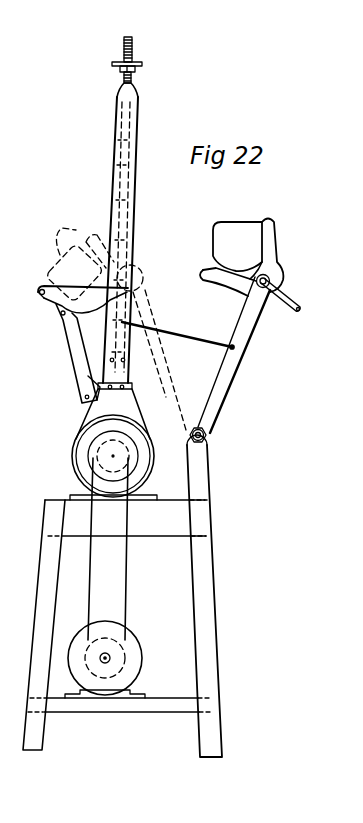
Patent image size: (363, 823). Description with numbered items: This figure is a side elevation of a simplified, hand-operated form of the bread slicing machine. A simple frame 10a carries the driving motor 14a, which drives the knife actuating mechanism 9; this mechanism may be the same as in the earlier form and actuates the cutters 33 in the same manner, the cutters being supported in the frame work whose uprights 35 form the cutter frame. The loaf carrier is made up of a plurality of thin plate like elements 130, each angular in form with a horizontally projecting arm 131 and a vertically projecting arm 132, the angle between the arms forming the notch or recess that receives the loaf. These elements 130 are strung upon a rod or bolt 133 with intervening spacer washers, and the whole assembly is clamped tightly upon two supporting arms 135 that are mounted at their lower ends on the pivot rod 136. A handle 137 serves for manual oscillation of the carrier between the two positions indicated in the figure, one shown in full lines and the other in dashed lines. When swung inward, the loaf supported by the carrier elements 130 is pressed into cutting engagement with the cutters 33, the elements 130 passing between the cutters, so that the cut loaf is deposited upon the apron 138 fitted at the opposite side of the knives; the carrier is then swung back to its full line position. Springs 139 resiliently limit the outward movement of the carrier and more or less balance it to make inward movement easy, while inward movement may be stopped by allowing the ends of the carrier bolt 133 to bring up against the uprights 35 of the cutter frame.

The knife actuating mechanism 9 is at (65, 458).
The frame 10a is at (223, 568).
The driving motor 14a is at (128, 645).
The cutters 33 is at (131, 207).
The uprights of the cutter frame 35 is at (138, 121).
The plate like elements 130 is at (279, 267).
The horizontally projecting arm 131 is at (215, 280).
The vertically projecting arm 132 is at (273, 237).
The rod or bolt 133 is at (271, 285).
The supporting arms 135 is at (247, 334).
The pivot rod 136 is at (208, 437).
The handle 137 is at (299, 318).
The apron 138 is at (61, 313).
The springs 139 is at (178, 335).